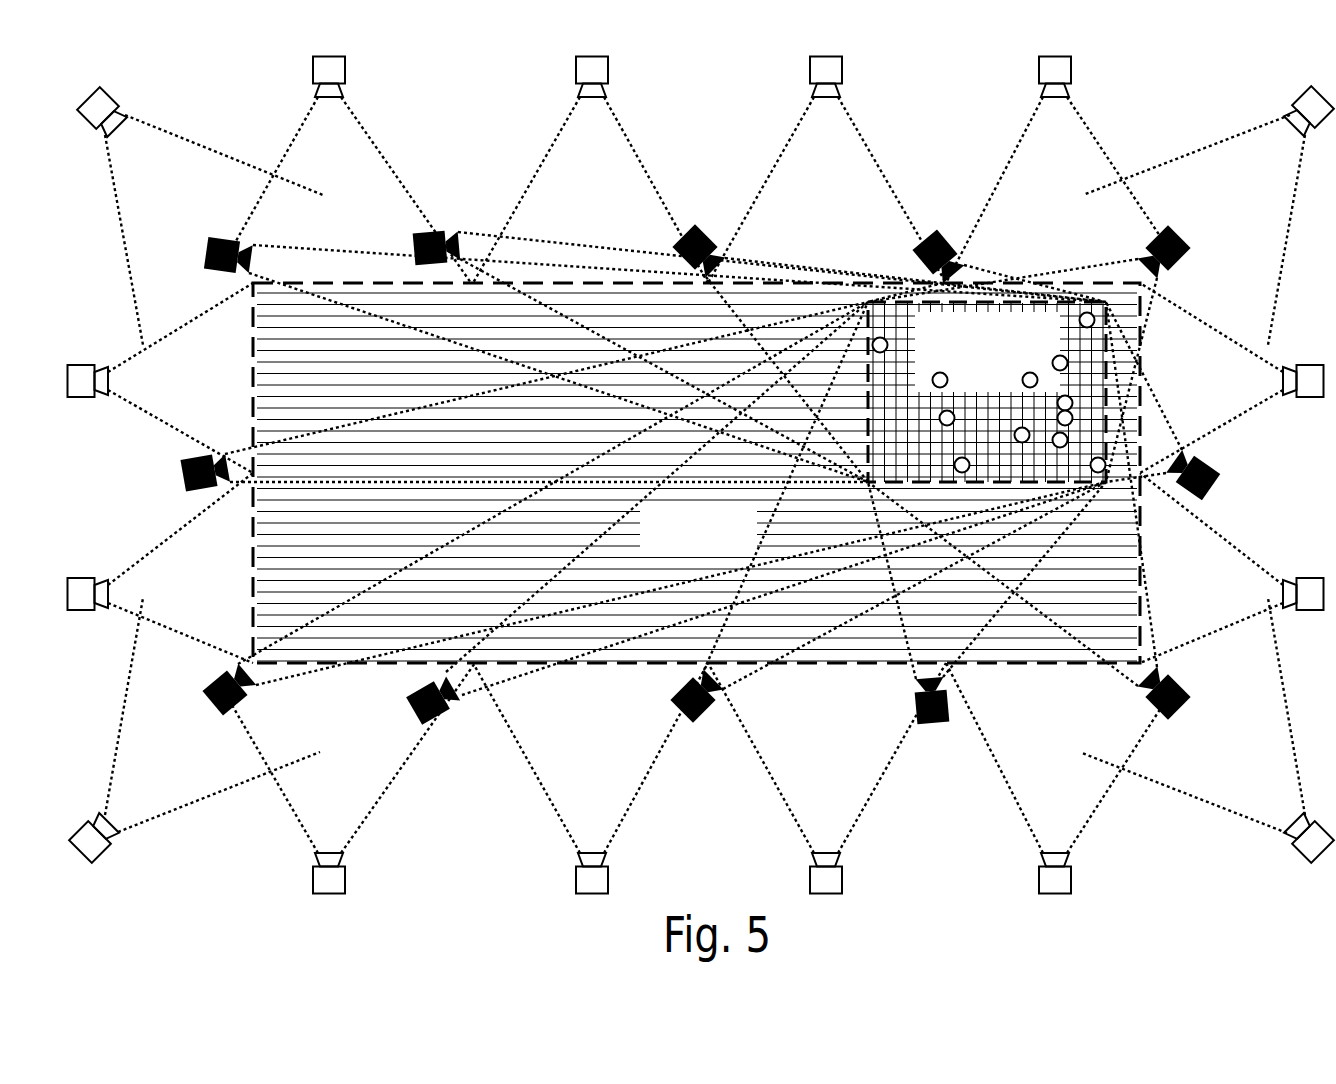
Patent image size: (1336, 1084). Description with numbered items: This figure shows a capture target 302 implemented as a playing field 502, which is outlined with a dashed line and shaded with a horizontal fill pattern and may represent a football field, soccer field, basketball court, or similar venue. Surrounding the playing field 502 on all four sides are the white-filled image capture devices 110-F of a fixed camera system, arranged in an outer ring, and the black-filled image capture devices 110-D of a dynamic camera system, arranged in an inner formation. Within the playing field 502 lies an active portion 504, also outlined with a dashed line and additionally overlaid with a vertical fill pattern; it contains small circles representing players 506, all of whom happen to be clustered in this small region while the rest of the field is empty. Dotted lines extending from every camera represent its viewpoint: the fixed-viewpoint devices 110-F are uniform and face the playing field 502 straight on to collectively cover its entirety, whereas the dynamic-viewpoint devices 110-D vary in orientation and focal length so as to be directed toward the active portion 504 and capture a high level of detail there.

The image capture devices of fixed camera system 110-F is at (315, 65).
The image capture devices of dynamic camera system 110-D is at (418, 240).
The capture target 302 is at (565, 283).
The playing field 502 is at (697, 477).
The active portion 504 is at (987, 392).
The players 506 is at (1088, 432).